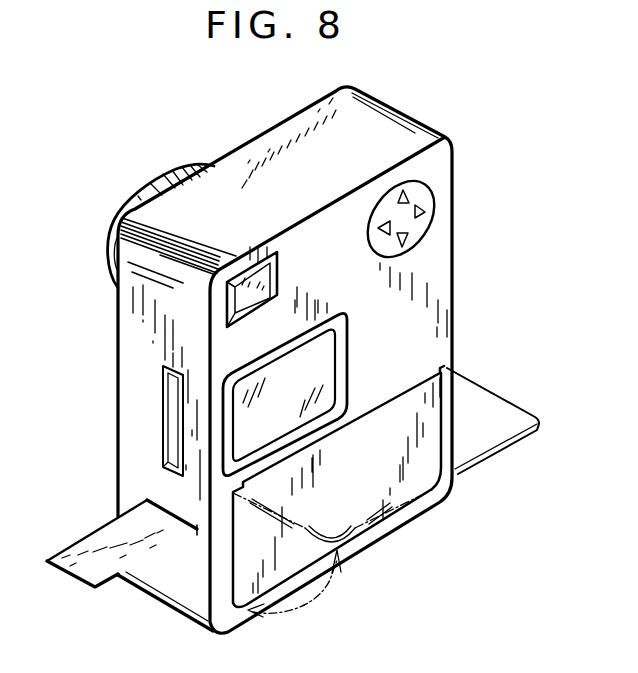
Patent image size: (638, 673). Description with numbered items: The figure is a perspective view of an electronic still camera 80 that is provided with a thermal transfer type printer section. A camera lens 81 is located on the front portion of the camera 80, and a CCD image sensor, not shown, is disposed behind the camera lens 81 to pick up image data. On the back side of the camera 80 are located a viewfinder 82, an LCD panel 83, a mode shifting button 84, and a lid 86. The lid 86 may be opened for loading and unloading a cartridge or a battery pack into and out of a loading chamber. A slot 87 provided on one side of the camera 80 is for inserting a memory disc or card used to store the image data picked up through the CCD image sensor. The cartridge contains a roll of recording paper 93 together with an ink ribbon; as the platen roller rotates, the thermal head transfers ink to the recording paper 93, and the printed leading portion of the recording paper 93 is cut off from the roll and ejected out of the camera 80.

The electronic still camera 80 is at (73, 177).
The camera lens 81 is at (153, 176).
The viewfinder 82 is at (270, 281).
The LCD panel 83 is at (326, 356).
The mode shifting button 84 is at (432, 197).
The lid 86 is at (490, 392).
The slot 87 is at (173, 428).
The recording paper 93 is at (82, 550).